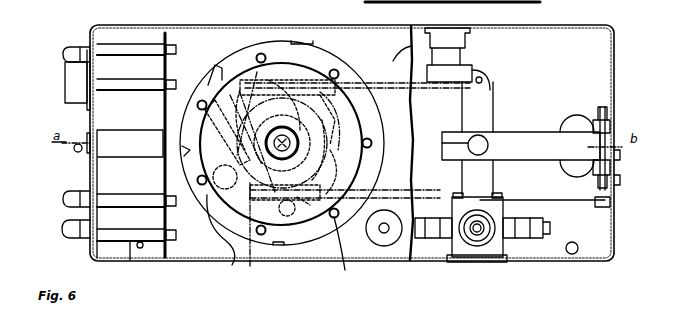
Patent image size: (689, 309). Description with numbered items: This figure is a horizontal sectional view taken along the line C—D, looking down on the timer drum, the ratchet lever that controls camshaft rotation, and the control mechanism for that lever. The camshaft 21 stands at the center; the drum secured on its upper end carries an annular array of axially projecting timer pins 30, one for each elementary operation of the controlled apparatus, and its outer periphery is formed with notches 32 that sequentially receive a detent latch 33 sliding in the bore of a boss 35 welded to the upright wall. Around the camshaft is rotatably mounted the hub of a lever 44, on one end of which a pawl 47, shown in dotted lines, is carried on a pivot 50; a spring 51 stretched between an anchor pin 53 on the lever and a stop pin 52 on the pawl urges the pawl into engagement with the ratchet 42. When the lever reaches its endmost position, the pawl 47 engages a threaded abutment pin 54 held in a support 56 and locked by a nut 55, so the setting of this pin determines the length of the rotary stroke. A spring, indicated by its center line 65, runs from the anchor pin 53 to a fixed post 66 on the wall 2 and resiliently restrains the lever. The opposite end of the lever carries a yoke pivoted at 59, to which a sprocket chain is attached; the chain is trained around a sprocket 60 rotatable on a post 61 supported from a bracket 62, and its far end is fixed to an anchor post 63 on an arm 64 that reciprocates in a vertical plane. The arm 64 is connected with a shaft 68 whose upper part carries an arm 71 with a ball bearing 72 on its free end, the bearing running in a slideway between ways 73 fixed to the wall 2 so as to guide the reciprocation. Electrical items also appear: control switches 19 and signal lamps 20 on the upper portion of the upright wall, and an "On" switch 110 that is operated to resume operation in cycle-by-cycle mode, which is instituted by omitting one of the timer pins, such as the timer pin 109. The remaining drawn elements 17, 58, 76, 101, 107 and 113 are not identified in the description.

The upright wall 2 is at (615, 62).
The valve 17 is at (462, 258).
The control switches 19 is at (75, 152).
The signal lamps 20 is at (66, 50).
The camshaft 21 is at (282, 135).
The timer pins 30 is at (264, 54).
The notches 32 is at (282, 168).
The detent latch 33 is at (172, 182).
The boss 35 is at (117, 137).
The ratchet 42 is at (331, 121).
The lever 44 is at (331, 150).
The pawl 47 is at (251, 239).
The pivot 50 is at (287, 216).
The spring 51 is at (297, 200).
The stop pin 52 is at (262, 196).
The anchor pin 53 is at (337, 172).
The threaded abutment pin 54 is at (208, 103).
The nut 55 is at (278, 132).
The support 56 is at (272, 144).
The link 58 is at (267, 80).
The yoke pivot 59 is at (243, 90).
The sprocket 60 is at (470, 62).
The post 61 is at (456, 40).
The bracket 62 is at (396, 56).
The anchor post 63 is at (487, 80).
The arm 64 is at (493, 105).
The spring 65 is at (528, 200).
The fixed post 66 is at (614, 213).
The shaft 68 is at (488, 140).
The arm 71 is at (540, 136).
The ball bearing 72 is at (610, 162).
The ways 73 is at (612, 125).
The rod 76 is at (357, 140).
The roller 101 is at (580, 125).
The inlet nipple 107 is at (420, 240).
The timer pin 109 is at (352, 252).
The "On" switch 110 is at (65, 95).
The base plate 113 is at (505, 262).